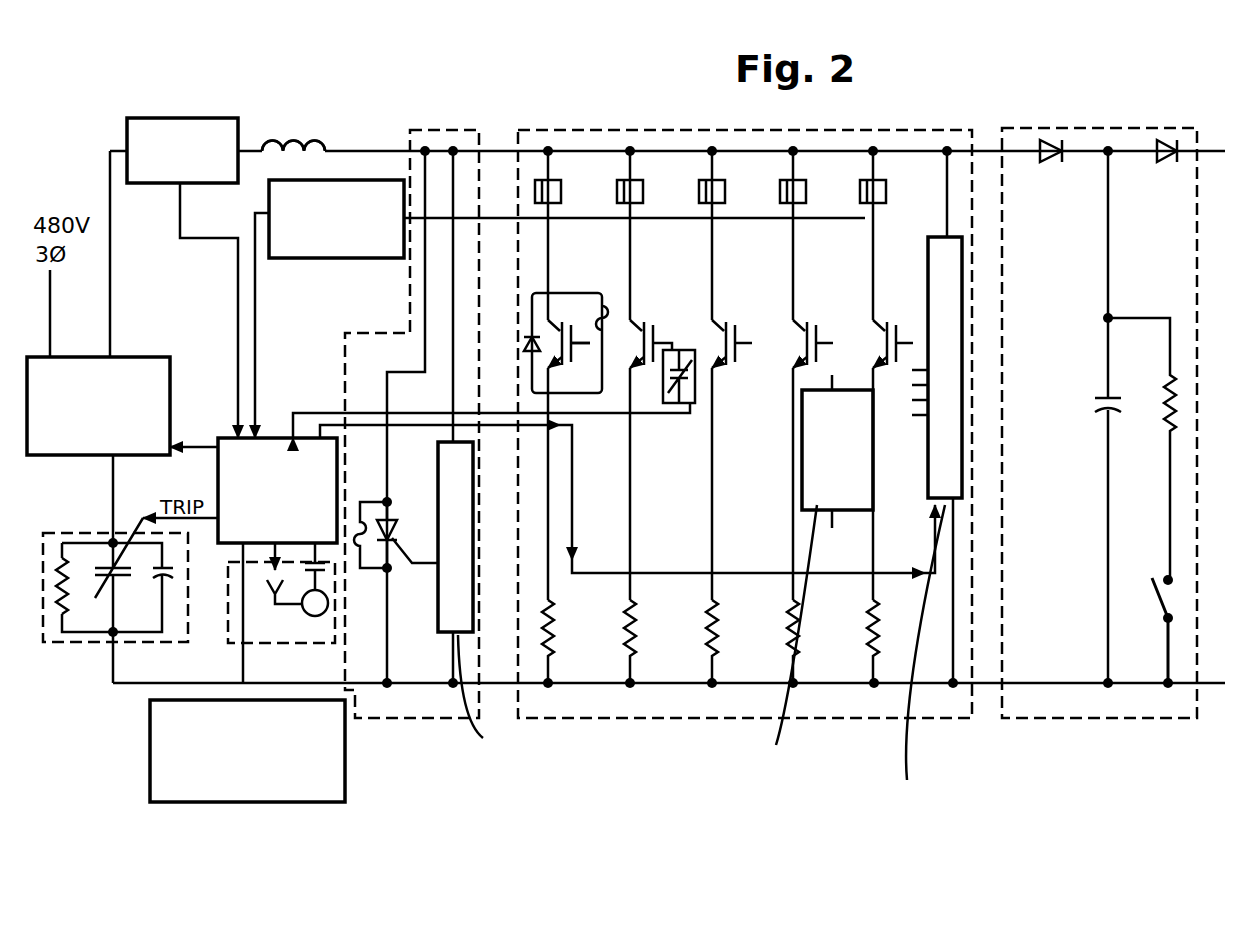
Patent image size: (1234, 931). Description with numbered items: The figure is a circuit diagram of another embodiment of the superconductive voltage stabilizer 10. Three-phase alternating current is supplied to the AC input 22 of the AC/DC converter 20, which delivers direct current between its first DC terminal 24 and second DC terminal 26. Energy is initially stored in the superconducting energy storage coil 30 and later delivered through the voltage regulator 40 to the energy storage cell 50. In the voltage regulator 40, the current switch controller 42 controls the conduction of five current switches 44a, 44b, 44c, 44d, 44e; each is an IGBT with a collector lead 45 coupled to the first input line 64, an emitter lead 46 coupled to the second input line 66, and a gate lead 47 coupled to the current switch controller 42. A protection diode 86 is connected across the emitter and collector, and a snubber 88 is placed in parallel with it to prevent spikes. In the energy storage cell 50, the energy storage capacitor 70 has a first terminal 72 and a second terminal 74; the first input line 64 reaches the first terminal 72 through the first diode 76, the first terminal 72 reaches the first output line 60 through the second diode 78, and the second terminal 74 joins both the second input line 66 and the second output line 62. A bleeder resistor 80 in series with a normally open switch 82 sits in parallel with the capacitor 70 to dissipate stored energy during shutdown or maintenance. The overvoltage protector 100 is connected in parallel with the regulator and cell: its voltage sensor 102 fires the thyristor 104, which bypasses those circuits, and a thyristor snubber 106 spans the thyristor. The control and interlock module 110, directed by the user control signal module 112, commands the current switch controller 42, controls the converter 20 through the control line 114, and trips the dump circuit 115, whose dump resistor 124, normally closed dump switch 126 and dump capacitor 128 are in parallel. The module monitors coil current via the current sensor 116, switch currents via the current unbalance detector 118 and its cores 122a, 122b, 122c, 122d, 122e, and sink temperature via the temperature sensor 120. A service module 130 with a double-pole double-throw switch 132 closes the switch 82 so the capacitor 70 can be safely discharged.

The superconductive voltage stabilizer 10 is at (781, 589).
The AC/DC converter 20 is at (98, 423).
The AC input 22 is at (69, 313).
The first DC terminal 24 is at (136, 254).
The second DC terminal 26 is at (142, 569).
The superconducting energy storage coil 30 is at (304, 126).
The voltage regulator 40 is at (745, 410).
The current switch controller 42 is at (1026, 475).
The current switch 44a is at (573, 458).
The current switch 44b is at (660, 485).
The current switch 44c is at (742, 485).
The current switch 44d is at (824, 485).
The current switch 44e is at (896, 485).
The collector lead 45 is at (519, 284).
The emitter lead 46 is at (576, 384).
The gate lead 47 is at (605, 344).
The energy storage cell 50 is at (1099, 410).
The first output line 60 is at (1197, 126).
The second output line 62 is at (1198, 721).
The first input line 64 is at (959, 126).
The second input line 66 is at (1004, 721).
The energy storage capacitor 70 is at (1082, 384).
The first terminal 72 is at (1134, 274).
The second terminal 74 is at (1076, 546).
The first diode 76 is at (1049, 177).
The second diode 78 is at (1160, 177).
The resistor 80 is at (1142, 449).
The switch 82 is at (1150, 629).
The protection diode 86 is at (513, 344).
The snubber 88 is at (610, 296).
The overvoltage protector 100 is at (412, 458).
The voltage sensor 102 is at (488, 610).
The thyristor 104 is at (408, 520).
The thyristor snubber 106 is at (396, 502).
The control and interlock module 110 is at (240, 456).
The user control signal module 112 is at (211, 752).
The control line 114 is at (204, 413).
The dump circuit 115 is at (109, 619).
The current sensor 116 is at (197, 259).
The current unbalance detector 118 is at (329, 309).
The temperature sensor 120 is at (673, 401).
The core 122a is at (579, 235).
The core 122b is at (661, 235).
The core 122c is at (741, 235).
The core 122d is at (824, 235).
The core 122e is at (904, 235).
The dump resistor 124 is at (61, 555).
The dump switch 126 is at (129, 575).
The dump capacitor 128 is at (190, 621).
The service module 130 is at (281, 613).
The double-pole double-throw switch 132 is at (379, 661).